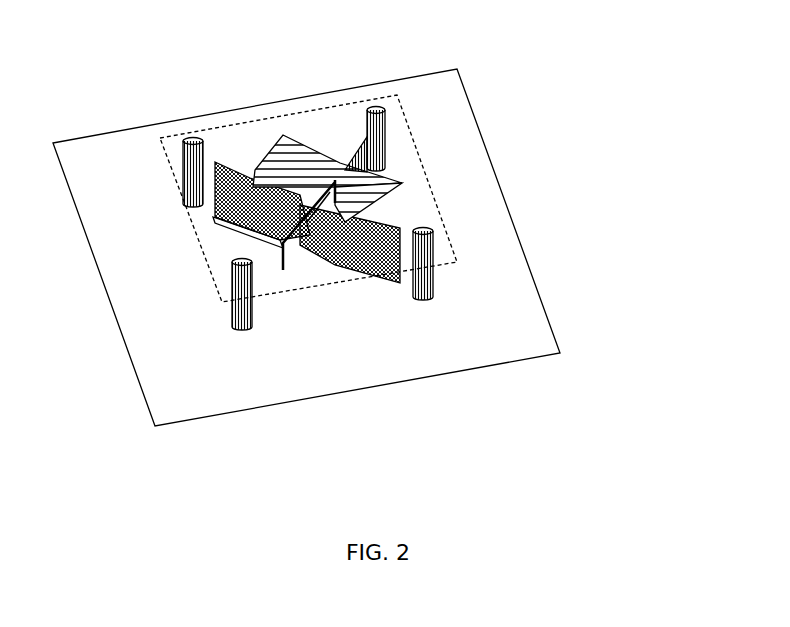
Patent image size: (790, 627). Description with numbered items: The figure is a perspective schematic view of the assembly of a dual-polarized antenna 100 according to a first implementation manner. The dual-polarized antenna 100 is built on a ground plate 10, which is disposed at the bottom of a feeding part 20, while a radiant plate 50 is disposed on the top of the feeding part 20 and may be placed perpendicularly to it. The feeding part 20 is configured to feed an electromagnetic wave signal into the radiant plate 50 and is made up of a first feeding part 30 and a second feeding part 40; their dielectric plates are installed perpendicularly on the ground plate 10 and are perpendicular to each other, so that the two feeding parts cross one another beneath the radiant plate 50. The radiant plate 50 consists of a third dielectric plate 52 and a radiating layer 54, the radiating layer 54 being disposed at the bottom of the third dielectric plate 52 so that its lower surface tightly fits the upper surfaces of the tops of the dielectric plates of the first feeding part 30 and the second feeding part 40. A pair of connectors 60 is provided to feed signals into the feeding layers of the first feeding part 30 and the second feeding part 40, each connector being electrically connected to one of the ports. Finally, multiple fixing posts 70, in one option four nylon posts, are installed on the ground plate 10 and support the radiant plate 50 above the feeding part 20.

The dual-polarized antenna 100 is at (309, 40).
The ground plate 10 is at (450, 340).
The feeding part 20 is at (457, 253).
The first feeding part 30 is at (287, 262).
The second feeding part 40 is at (372, 267).
The radiant plate 50 is at (428, 174).
The third dielectric plate 52 is at (415, 147).
The radiating layer 54 is at (402, 185).
The connectors 60 is at (283, 270).
The fixing posts 70 is at (428, 282).